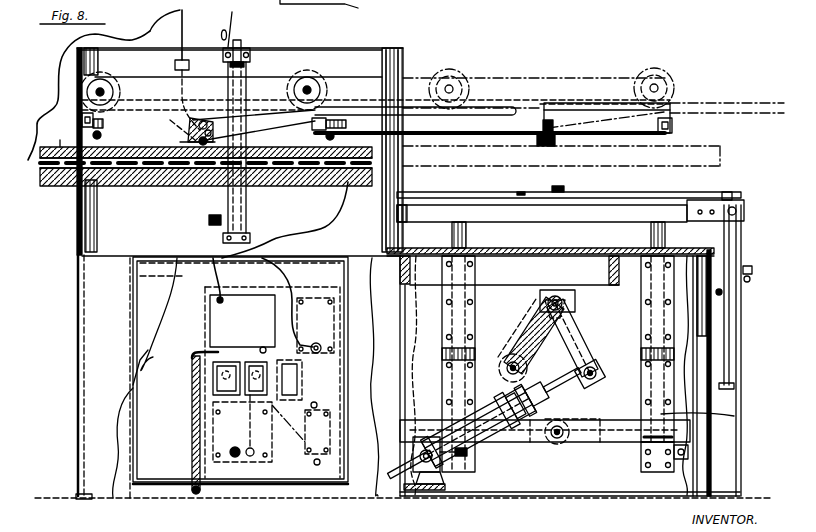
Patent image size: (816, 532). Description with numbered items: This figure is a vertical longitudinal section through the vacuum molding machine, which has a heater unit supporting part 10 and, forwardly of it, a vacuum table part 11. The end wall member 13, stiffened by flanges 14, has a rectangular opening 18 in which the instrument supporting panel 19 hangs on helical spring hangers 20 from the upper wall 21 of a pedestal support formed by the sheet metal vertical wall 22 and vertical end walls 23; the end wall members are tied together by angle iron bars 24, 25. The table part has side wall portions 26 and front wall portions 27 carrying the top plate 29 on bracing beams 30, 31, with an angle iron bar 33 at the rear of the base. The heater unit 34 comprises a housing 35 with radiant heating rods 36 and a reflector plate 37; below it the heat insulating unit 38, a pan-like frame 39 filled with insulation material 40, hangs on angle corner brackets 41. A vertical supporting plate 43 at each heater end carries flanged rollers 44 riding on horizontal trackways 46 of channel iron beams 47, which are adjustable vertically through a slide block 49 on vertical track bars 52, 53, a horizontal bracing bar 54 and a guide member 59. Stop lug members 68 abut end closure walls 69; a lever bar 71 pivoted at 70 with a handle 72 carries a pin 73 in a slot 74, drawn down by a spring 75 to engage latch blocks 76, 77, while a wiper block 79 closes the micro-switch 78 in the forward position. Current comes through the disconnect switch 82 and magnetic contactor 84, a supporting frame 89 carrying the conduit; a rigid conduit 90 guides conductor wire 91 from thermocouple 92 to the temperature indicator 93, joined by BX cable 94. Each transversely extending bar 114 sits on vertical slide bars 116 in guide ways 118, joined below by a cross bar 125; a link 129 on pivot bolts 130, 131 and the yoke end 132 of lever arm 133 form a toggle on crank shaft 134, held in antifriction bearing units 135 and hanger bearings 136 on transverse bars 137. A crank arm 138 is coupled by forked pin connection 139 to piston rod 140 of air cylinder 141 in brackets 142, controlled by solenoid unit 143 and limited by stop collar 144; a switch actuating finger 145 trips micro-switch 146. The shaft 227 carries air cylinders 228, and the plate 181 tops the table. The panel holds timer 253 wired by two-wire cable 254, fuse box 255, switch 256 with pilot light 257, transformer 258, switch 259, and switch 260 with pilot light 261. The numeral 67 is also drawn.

The heater unit supporting part 10 is at (65, 292).
The vacuum table part 11 is at (480, 498).
The end wall member 13 is at (336, 49).
The flange 14 is at (77, 58).
The rectangular opening 18 is at (133, 390).
The instrument supporting panel 19 is at (143, 410).
The helical spring hangers 20 is at (330, 264).
The upper wall 21 is at (345, 256).
The sheet metal vertical wall 22 is at (140, 380).
The vertical end walls 23 is at (77, 350).
The angle iron bar 24 is at (77, 258).
The angle iron bar 25 is at (82, 500).
The side wall portions 26 is at (692, 497).
The front wall portions 27 is at (712, 450).
The top plate 29 is at (575, 248).
The bracing beam 30 is at (400, 276).
The bracing beam 31 is at (613, 286).
The angle iron bar 33 is at (416, 498).
The heater unit 34 is at (47, 140).
The housing 35 is at (61, 135).
The radiant heating rods 36 is at (145, 188).
The reflector plate 37 is at (125, 188).
The heat insulating unit 38 is at (56, 189).
The pan-like frame 39 is at (38, 189).
The insulation material 40 is at (170, 188).
The angle corner brackets 41 is at (40, 177).
The vertical supporting plate 43 is at (274, 77).
The flanged rollers 44 is at (109, 81).
The horizontal trackways 46 is at (545, 106).
The channel iron beams 47 is at (593, 108).
The slide block 49 is at (404, 156).
The vertical track bar 52 is at (78, 50).
The vertical track bar 53 is at (388, 48).
The horizontal bracing bar 54 is at (404, 181).
The guide member 59 is at (246, 66).
The fitting 67 is at (237, 40).
The stop lug member 68 is at (103, 124).
The end closure walls 69 is at (82, 118).
The pivot 70 is at (328, 104).
The lever bar 71 is at (412, 110).
The handle 72 is at (509, 107).
The pin 73 is at (190, 125).
The slot 74 is at (201, 118).
The spring 75 is at (185, 142).
The latch block 76 is at (227, 82).
The latch block 77 is at (549, 124).
The micro-switch 78 is at (547, 146).
The switch actuating wiper block 79 is at (172, 130).
The disconnect switch 82 is at (150, 29).
The magnetic contactor 84 is at (328, 8).
The supporting frame 89 is at (206, 6).
The rigid conduit 90 is at (186, 44).
The conductor wire 91 is at (146, 35).
The thermocouple 92 is at (204, 188).
The temperature indicator 93 is at (210, 315).
The BX cable 94 is at (192, 414).
The transversely extending bar 114 is at (529, 218).
The vertical slide bars 116 is at (452, 239).
The guide ways 118 is at (441, 330).
The cross bar 125 is at (608, 442).
The link 129 is at (560, 415).
The pivot bolt 130 is at (557, 446).
The pivot bolt 131 is at (506, 364).
The yoke end 132 is at (522, 354).
The lever arm 133 is at (534, 334).
The crank shaft 134 is at (545, 304).
The antifriction bearing units 135 is at (540, 293).
The hanger bearings 136 is at (566, 304).
The transverse bars 137 is at (590, 285).
The crank arm 138 is at (584, 340).
The forked pin connection 139 is at (598, 375).
The piston rod 140 is at (598, 382).
The air cylinder 141 is at (483, 406).
The brackets 142 is at (404, 488).
The solenoid unit 143 is at (424, 437).
The stop collar 144 is at (538, 394).
The switch actuating finger 145 is at (734, 417).
The micro-switch 146 is at (668, 470).
The plate 181 is at (520, 190).
The shaft 227 is at (745, 213).
The air cylinders 228 is at (742, 303).
The timer 253 is at (316, 298).
The 2-wire cable 254 is at (334, 223).
The fuse box 255 is at (280, 444).
The "On" and "Off" switch 256 is at (244, 404).
The pilot light 257 is at (262, 349).
The transformer 258 is at (330, 437).
The 2-pole single throw switch 259 is at (297, 380).
The "On" and "Off" switch 260 is at (213, 390).
The pilot light 261 is at (153, 358).